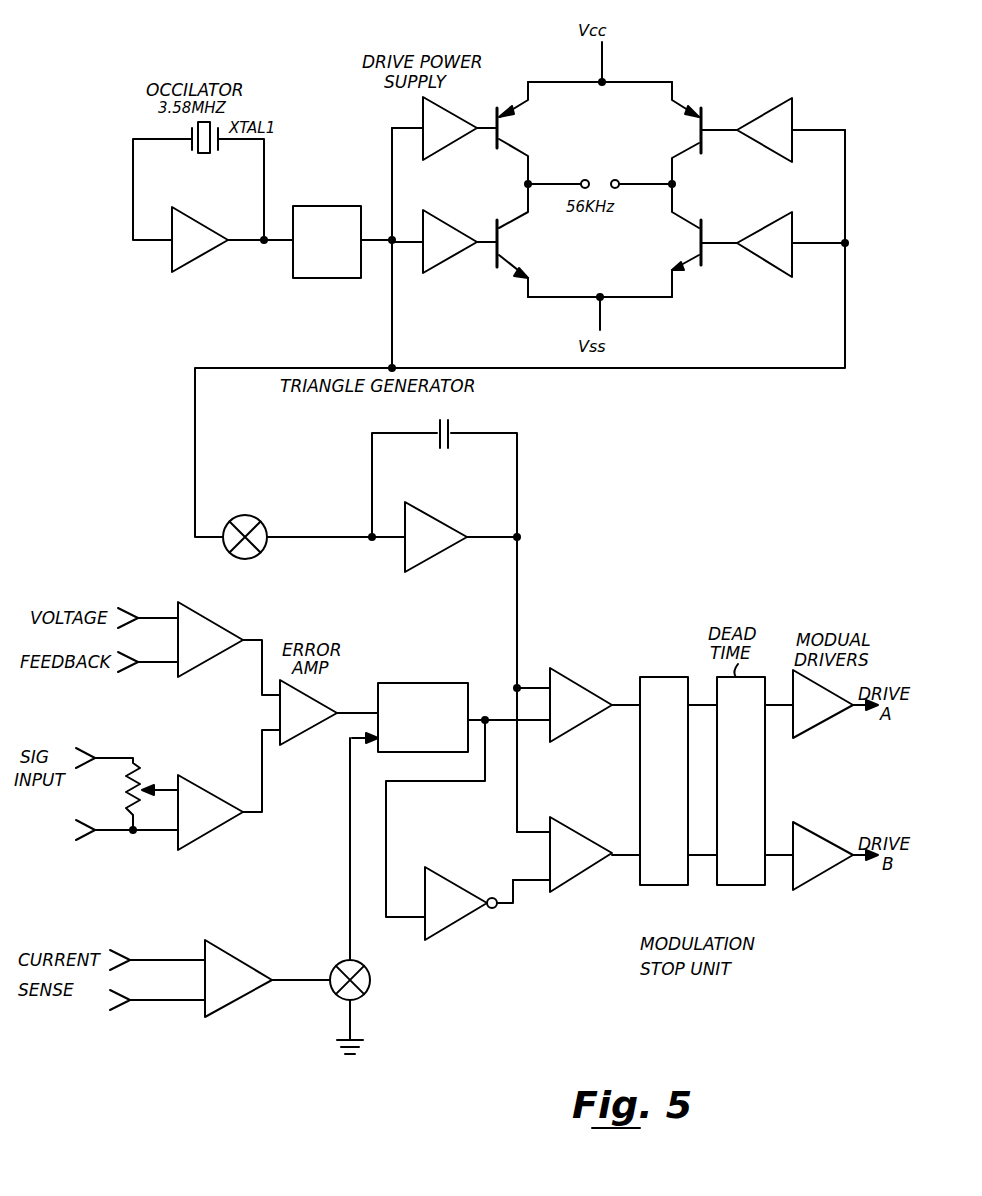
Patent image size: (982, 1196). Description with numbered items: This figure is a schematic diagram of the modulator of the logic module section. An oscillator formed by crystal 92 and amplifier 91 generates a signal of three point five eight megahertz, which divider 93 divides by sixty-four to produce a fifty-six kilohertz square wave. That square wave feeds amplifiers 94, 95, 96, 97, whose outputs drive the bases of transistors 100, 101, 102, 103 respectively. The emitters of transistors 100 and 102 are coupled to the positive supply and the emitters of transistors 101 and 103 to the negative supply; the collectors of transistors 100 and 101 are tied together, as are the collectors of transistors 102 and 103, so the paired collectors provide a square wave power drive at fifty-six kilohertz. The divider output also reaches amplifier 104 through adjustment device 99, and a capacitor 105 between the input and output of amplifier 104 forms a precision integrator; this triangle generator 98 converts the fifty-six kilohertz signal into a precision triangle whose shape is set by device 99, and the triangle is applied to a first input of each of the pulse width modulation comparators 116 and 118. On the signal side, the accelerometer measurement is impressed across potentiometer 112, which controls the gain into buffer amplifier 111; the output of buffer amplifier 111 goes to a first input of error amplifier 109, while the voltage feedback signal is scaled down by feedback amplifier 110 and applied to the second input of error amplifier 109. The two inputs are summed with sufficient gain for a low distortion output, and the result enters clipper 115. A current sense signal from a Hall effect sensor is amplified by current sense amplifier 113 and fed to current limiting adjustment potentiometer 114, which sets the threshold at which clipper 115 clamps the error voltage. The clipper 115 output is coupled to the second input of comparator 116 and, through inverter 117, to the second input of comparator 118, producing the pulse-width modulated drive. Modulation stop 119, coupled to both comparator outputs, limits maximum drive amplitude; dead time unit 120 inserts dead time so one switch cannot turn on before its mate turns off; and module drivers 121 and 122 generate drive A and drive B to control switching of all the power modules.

The amplifier 91 is at (185, 268).
The crystal 92 is at (204, 153).
The divider 93 is at (327, 278).
The amplifier 94 is at (440, 152).
The amplifier 95 is at (440, 268).
The amplifier 96 is at (762, 106).
The amplifier 97 is at (763, 218).
The triangle generator 98 is at (372, 467).
The adjustment device 99 is at (250, 514).
The transistor 100 is at (516, 96).
The transistor 101 is at (510, 262).
The transistor 102 is at (683, 112).
The transistor 103 is at (683, 222).
The amplifier 104 is at (446, 550).
The capacitor 105 is at (440, 450).
The error amplifier 109 is at (316, 728).
The feedback amplifier 110 is at (212, 622).
The buffer amplifier 111 is at (212, 832).
The potentiometer 112 is at (124, 800).
The current sense amplifier 113 is at (228, 1005).
The current limiting adjustment potentiometer 114 is at (371, 980).
The clipper 115 is at (455, 683).
The comparator 116 is at (566, 672).
The inverter 117 is at (455, 925).
The comparator 118 is at (566, 890).
The modulation stop 119 is at (658, 914).
The dead time unit 120 is at (752, 885).
The module driver 121 is at (820, 725).
The module driver 122 is at (810, 830).